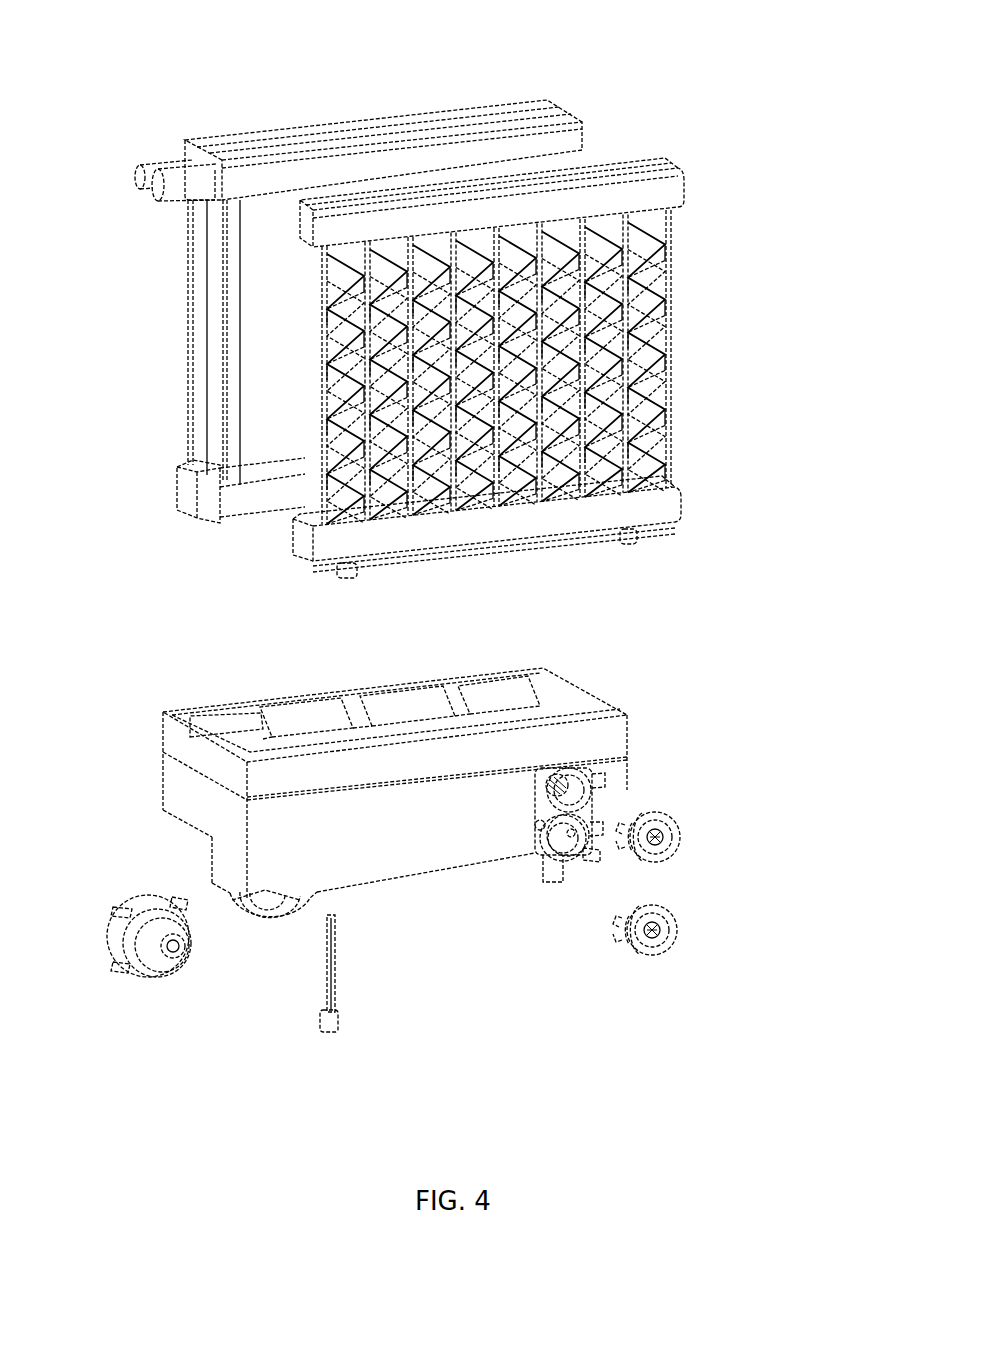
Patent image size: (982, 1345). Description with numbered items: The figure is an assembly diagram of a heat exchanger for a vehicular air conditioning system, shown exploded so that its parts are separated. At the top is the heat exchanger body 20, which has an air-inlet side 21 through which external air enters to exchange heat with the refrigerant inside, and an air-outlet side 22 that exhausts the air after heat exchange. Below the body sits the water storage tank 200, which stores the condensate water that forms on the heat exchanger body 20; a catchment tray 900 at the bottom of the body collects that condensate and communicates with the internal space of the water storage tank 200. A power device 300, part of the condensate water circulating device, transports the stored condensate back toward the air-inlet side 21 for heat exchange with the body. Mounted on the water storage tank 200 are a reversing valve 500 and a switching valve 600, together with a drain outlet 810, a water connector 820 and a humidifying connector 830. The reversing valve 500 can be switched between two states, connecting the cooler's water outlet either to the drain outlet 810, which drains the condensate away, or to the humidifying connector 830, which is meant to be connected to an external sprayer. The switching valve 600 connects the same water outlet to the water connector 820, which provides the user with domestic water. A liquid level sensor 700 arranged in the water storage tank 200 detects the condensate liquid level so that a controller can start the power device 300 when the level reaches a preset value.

The heat exchanger body 20 is at (318, 148).
The air-inlet side 21 is at (254, 390).
The air-outlet side 22 is at (148, 248).
The water storage tank 200 is at (440, 835).
The power device 300 is at (152, 950).
The reversing valve 500 is at (650, 935).
The switching valve 600 is at (652, 838).
The liquid level sensor 700 is at (330, 1015).
The drain outlet 810 is at (560, 882).
The water connector 820 is at (608, 787).
The humidifying connector 830 is at (600, 832).
The catchment tray 900 is at (518, 708).